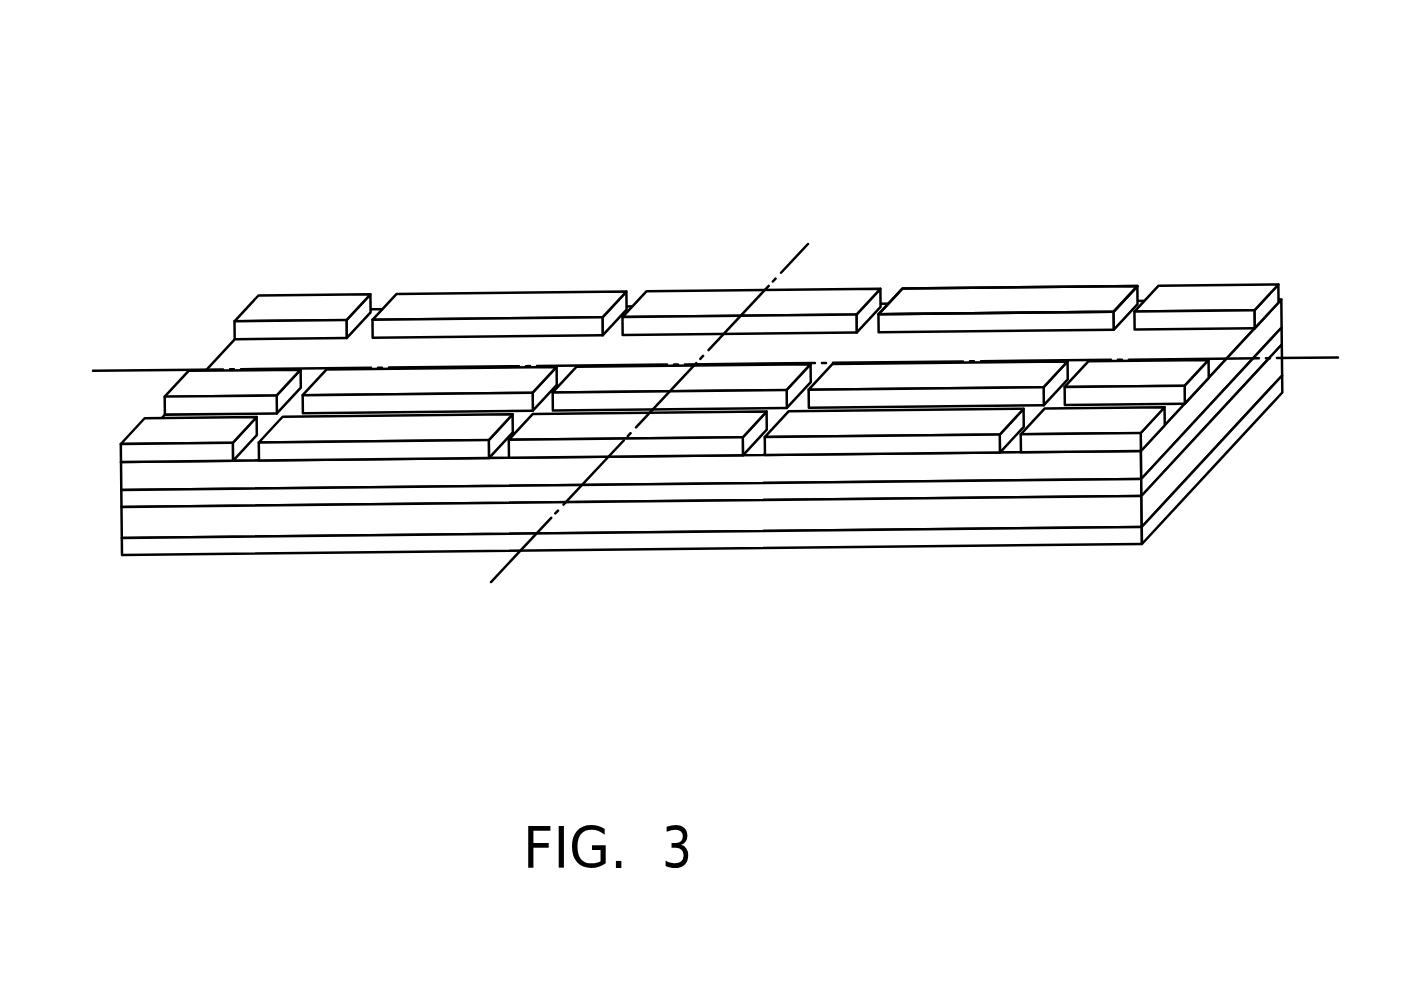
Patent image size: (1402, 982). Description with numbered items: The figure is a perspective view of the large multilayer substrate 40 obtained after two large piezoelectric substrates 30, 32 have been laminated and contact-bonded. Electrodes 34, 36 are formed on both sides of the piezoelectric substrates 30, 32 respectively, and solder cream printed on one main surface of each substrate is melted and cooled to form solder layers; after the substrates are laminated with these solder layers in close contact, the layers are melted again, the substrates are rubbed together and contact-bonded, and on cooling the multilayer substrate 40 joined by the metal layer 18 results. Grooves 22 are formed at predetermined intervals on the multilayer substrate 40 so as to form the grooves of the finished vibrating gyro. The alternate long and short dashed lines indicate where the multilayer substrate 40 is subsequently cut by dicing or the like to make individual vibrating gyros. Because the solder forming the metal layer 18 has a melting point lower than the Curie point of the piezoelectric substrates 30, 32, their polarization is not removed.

The multilayer substrate 40 is at (742, 317).
The grooves 22 is at (468, 332).
The electrode 34 is at (1007, 302).
The piezoelectric substrate 30 is at (1273, 328).
The metal layer 18 is at (1275, 338).
The piezoelectric substrate 32 is at (1273, 375).
The electrode 36 is at (1245, 432).